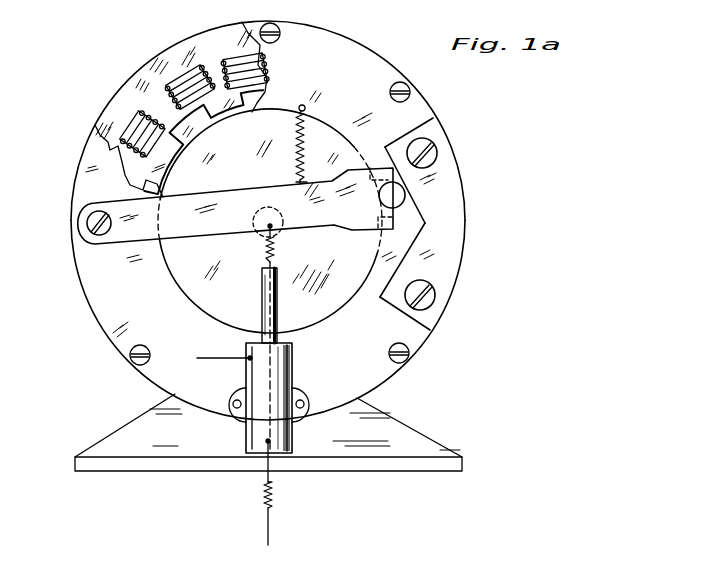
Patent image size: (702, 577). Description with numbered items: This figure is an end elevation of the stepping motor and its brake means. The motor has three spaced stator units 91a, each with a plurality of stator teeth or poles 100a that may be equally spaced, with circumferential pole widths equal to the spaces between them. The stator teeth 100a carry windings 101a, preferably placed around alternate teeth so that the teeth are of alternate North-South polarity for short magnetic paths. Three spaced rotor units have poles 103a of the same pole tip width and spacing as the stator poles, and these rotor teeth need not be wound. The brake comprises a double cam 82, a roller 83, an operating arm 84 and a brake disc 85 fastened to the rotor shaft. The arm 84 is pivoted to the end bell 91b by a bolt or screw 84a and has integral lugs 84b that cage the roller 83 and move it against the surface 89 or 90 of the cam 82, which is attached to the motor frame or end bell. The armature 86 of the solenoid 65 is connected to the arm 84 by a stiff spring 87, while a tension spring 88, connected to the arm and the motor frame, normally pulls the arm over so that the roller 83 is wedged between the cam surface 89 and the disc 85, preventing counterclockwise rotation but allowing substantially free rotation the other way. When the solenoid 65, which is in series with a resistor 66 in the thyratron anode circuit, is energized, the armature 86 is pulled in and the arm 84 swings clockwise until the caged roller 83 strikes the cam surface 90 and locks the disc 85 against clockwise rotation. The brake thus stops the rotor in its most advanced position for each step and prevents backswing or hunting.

The stator teeth or poles 100a is at (178, 80).
The stator unit 91a is at (153, 66).
The end bell 91b is at (95, 273).
The windings 101a is at (140, 104).
The rotor poles 103a is at (232, 104).
The operating arm 84 is at (217, 198).
The bolt or screw 84a is at (87, 222).
The lugs 84b is at (377, 153).
The tension spring 88 is at (307, 141).
The stiff spring 87 is at (265, 250).
The armature 86 is at (262, 297).
The brake disc 85 is at (323, 303).
The roller 83 is at (397, 209).
The cam surface 89 is at (406, 208).
The cam surface 90 is at (402, 260).
The double cam 82 is at (435, 224).
The solenoid 65 is at (283, 368).
The resistor 66 is at (278, 493).